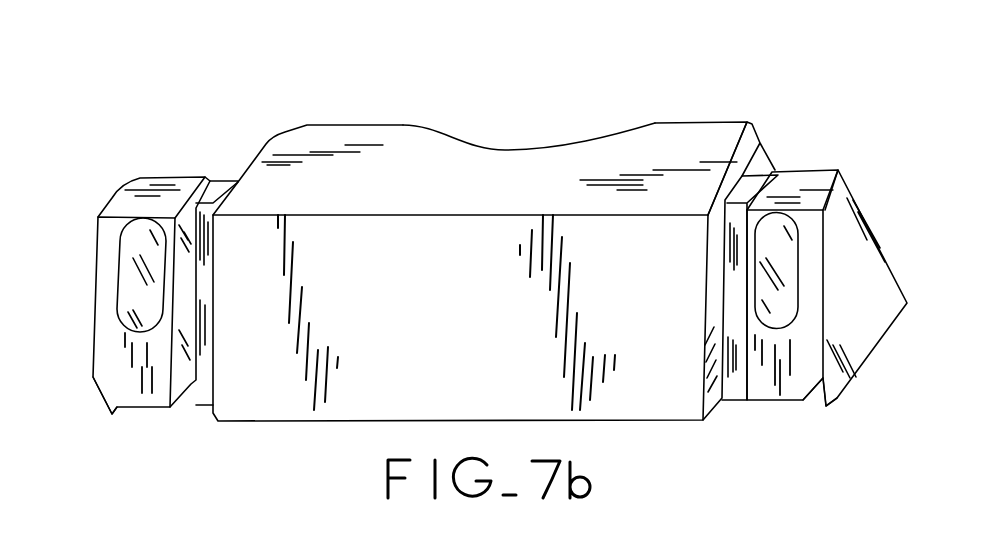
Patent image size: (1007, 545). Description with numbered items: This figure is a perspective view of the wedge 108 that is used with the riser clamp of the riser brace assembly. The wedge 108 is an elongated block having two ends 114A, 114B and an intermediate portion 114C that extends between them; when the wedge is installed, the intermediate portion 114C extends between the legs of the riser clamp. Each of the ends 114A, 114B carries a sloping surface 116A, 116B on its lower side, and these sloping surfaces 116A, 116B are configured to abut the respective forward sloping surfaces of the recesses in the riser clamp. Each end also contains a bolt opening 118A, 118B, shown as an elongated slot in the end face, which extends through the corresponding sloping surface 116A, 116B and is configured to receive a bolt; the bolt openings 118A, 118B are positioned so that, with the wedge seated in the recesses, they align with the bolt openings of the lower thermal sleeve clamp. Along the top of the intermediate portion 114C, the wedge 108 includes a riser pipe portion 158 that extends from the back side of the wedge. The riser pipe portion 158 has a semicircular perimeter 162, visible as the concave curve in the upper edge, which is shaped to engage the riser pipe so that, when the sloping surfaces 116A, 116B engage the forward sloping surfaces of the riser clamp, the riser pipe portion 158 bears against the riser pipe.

The wedge 108 is at (642, 83).
The end 114A is at (160, 183).
The end 114B is at (800, 183).
The intermediate portion 114C is at (357, 249).
The sloping surface 116A is at (140, 377).
The sloping surface 116B is at (777, 375).
The bolt opening 118A is at (122, 262).
The bolt opening 118B is at (794, 250).
The riser pipe portion 158 is at (722, 138).
The semicircular perimeter 162 is at (485, 150).